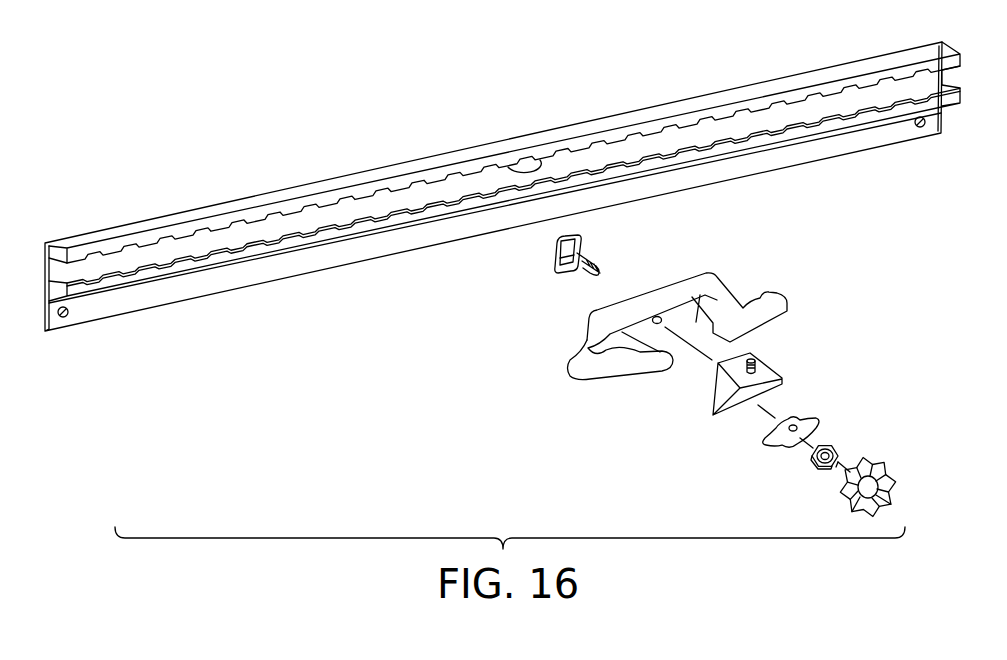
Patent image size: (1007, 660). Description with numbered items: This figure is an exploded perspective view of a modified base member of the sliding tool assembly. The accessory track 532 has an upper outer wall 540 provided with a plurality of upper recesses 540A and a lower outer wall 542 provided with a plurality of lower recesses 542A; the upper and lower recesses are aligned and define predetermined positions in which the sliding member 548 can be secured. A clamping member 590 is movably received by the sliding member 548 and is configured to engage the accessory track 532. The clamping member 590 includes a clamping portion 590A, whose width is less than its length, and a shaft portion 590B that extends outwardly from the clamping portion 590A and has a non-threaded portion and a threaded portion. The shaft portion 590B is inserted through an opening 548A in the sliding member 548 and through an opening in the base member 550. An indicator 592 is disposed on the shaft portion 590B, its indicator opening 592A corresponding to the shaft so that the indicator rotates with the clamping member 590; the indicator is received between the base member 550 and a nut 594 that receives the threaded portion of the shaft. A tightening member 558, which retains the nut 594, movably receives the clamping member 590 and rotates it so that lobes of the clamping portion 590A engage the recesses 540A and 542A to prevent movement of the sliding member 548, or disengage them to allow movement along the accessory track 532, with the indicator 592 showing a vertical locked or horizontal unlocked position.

The accessory track 532 is at (502, 186).
The upper outer wall 540 is at (504, 152).
The upper recesses 540A is at (538, 165).
The lower outer wall 542 is at (504, 197).
The lower recesses 542A is at (313, 230).
The sliding member 548 is at (678, 324).
The opening 548A is at (642, 328).
The base member 550 is at (776, 366).
The tightening member 558 is at (843, 497).
The clamping member 590 is at (580, 262).
The clamping portion 590A is at (553, 268).
The shaft portion 590B is at (602, 262).
The indicator 592 is at (807, 430).
The indicator opening 592A is at (805, 423).
The nut 594 is at (838, 441).